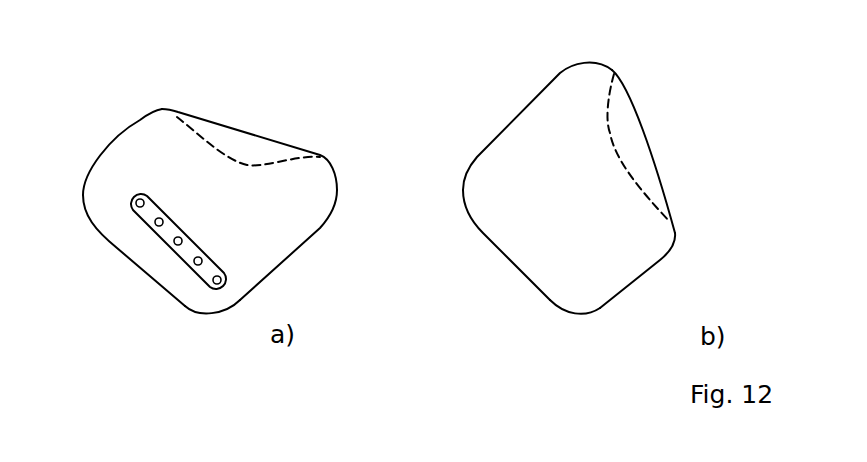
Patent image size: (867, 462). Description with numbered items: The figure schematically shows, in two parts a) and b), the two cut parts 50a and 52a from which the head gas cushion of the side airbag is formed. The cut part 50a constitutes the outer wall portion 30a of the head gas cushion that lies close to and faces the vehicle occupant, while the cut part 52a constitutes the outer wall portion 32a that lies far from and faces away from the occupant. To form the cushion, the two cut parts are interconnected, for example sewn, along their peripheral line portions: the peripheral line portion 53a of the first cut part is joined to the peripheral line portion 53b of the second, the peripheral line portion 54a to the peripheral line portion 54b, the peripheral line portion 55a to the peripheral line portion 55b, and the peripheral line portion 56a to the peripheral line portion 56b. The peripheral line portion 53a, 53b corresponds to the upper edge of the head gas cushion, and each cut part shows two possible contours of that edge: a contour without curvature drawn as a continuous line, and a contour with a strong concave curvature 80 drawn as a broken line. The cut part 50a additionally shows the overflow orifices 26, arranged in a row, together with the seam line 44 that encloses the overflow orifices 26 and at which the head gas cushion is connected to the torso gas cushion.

The concave curvature 80 is at (170, 112).
The peripheral line portion 54a is at (117, 138).
The peripheral line portion 53a is at (214, 122).
The peripheral line portion 56a is at (322, 228).
The peripheral line portion 55a is at (115, 248).
The outer wall portion 30a is at (221, 201).
The cut part 50a is at (221, 201).
The overflow orifices 26 is at (207, 256).
The seam line 44 is at (213, 288).
The peripheral line portion 56b is at (520, 113).
The peripheral line portion 53b is at (647, 135).
The peripheral line portion 54b is at (647, 278).
The peripheral line portion 55b is at (513, 262).
The outer wall portion 32a is at (617, 195).
The cut part 52a is at (617, 195).